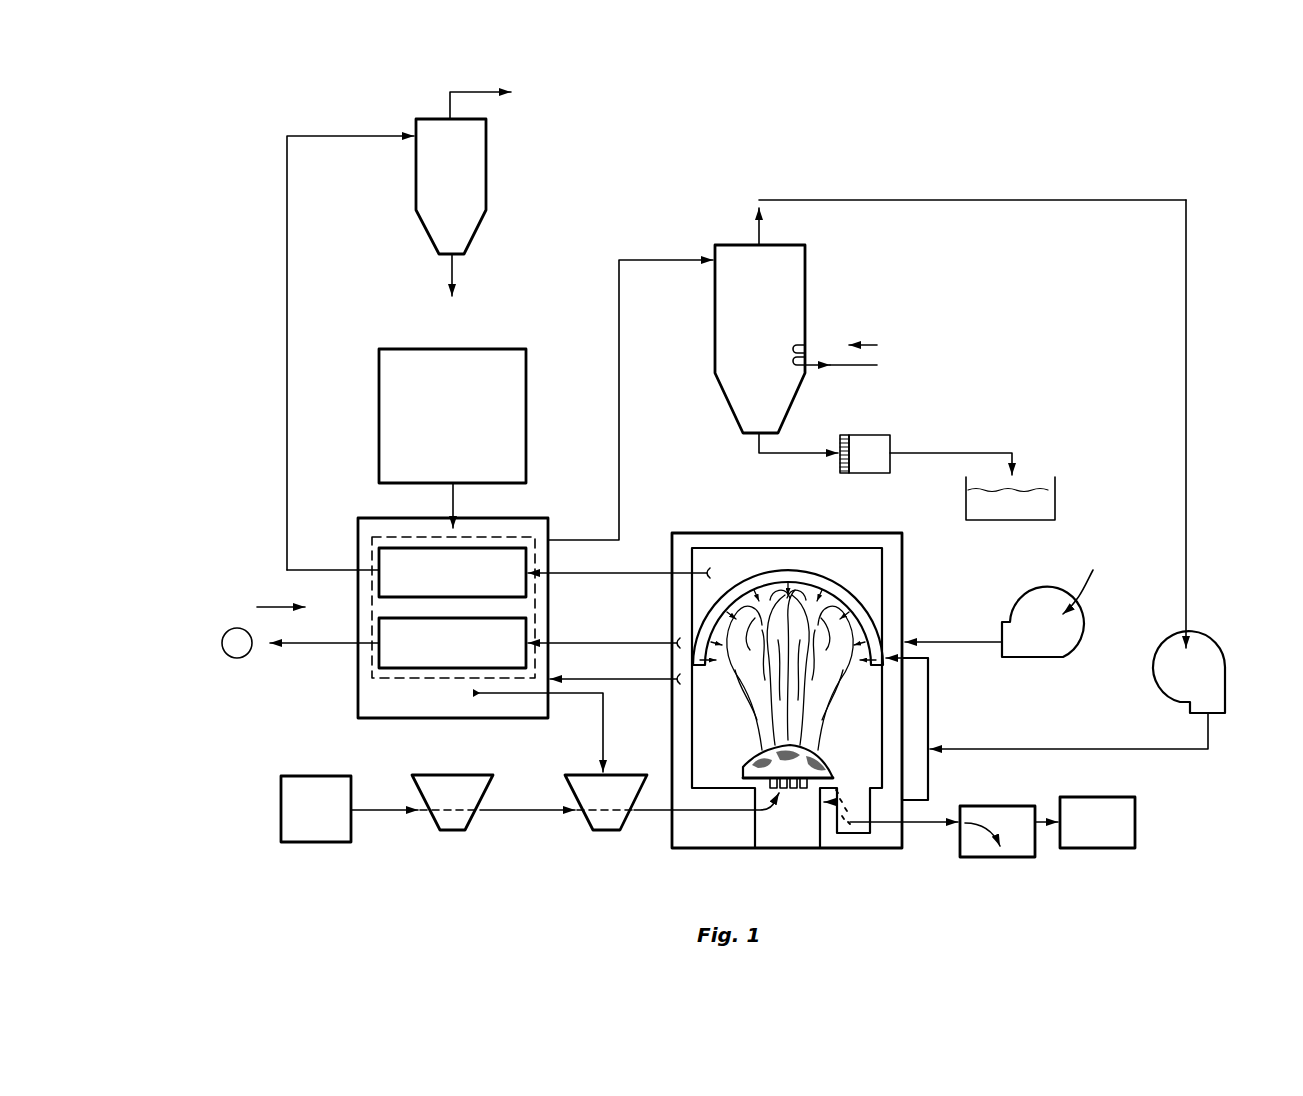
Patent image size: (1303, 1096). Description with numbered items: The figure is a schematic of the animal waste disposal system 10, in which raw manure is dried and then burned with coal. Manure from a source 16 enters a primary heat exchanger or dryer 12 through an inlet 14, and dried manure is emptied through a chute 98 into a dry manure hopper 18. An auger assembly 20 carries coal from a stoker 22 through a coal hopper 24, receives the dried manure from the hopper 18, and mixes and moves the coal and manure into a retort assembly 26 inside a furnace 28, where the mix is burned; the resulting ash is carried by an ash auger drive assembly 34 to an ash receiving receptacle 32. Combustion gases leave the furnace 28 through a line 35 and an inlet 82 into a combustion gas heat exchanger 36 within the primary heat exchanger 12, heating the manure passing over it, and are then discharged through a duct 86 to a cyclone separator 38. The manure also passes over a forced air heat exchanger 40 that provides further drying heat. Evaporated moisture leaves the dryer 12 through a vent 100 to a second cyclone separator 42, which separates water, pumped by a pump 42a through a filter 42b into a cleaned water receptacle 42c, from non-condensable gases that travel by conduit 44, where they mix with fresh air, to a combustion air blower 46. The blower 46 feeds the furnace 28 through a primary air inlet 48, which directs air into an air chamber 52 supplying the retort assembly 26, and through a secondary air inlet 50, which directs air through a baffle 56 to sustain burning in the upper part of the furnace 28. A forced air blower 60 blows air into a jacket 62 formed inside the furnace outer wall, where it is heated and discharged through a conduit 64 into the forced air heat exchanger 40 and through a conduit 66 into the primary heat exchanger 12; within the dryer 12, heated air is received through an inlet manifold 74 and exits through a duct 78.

The animal waste disposal system 10 is at (980, 164).
The primary heat exchanger 12 is at (269, 608).
The inlet 14 is at (453, 496).
The source 16 is at (379, 416).
The dry manure hopper 18 is at (628, 800).
The auger assembly 20 is at (386, 805).
The stoker 22 is at (283, 812).
The coal hopper 24 is at (437, 820).
The retort assembly 26 is at (742, 762).
The furnace 28 is at (723, 530).
The ash receiving receptacle 32 is at (1015, 857).
The ash auger drive assembly 34 is at (1135, 828).
The line 35 is at (645, 573).
The combustion gas heat exchanger 36 is at (379, 560).
The cyclone separator 38 is at (473, 172).
The forced air heat exchanger 40 is at (379, 656).
The cyclone separator 42 is at (787, 297).
The pump 42a is at (880, 443).
The filter 42b is at (840, 440).
The cleaned water receptacle 42c is at (1045, 505).
The inlet 44 is at (1190, 585).
The blower 46 is at (1220, 682).
The primary air inlet 48 is at (928, 780).
The secondary air inlet 50 is at (928, 690).
The air chamber 52 is at (770, 842).
The baffle 56 is at (841, 583).
The forced air blower 60 is at (1070, 630).
The jacket 62 is at (855, 535).
The conduit 64 is at (645, 643).
The conduit 66 is at (626, 684).
The inlet manifold 74 is at (558, 643).
The duct 78 is at (313, 648).
The inlet 82 is at (558, 573).
The duct 86 is at (288, 512).
The chute 98 is at (605, 740).
The vent 100 is at (619, 278).